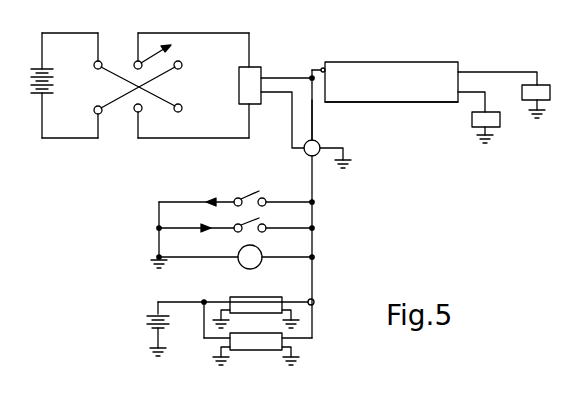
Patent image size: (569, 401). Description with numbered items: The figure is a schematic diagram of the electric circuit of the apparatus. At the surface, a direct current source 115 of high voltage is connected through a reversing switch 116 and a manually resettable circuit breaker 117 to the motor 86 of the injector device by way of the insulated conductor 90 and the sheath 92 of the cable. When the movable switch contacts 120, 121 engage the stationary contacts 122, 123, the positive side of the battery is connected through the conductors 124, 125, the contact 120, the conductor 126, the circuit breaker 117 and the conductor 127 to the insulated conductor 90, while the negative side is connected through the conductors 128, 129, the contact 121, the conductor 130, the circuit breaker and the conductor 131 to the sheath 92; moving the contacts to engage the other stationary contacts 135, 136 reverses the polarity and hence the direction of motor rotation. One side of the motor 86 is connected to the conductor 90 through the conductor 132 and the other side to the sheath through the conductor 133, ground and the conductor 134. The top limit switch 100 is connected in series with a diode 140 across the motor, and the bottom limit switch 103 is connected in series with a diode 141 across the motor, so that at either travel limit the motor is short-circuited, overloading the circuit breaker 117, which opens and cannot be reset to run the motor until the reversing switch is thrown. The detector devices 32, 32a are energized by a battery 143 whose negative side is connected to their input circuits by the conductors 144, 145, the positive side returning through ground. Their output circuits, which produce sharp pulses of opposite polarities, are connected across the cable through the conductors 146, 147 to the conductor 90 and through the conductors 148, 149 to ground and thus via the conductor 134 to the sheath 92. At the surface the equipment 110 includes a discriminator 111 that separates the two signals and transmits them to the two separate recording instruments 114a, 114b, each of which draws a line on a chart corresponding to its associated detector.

The conductor 128 is at (82, 33).
The conductor 124 is at (80, 138).
The direct current source 115 is at (36, 100).
The stationary contact 135 is at (92, 62).
The stationary contact 136 is at (92, 109).
The conductor 129 is at (135, 67).
The movable switch contact 121 is at (140, 106).
The stationary contact 122 is at (182, 64).
The stationary contact 123 is at (181, 106).
The conductor 125 is at (116, 87).
The movable switch contact 120 is at (156, 49).
The conductor 126 is at (224, 33).
The conductor 130 is at (215, 138).
The reversing switch 116 is at (139, 138).
The circuit breaker 117 is at (254, 66).
The conductor 127 is at (298, 78).
The conductor 131 is at (289, 132).
The discriminator 111 is at (394, 62).
The equipment 110 is at (417, 104).
The insulated conductor 90 is at (317, 112).
The sheath 92 is at (319, 142).
The conductor 134 is at (347, 157).
The recording instrument 114b is at (537, 84).
The recording instrument 114a is at (502, 124).
The diode 140 is at (213, 200).
The diode 141 is at (202, 226).
The top limit switch 100 is at (252, 192).
The bottom limit switch 103 is at (257, 220).
The conductor 133 is at (198, 258).
The conductor 132 is at (296, 258).
The motor 86 is at (250, 270).
The conductor 144 is at (208, 302).
The battery 143 is at (146, 322).
The conductor 145 is at (203, 320).
The detector device 32 is at (264, 314).
The detector device 32a is at (276, 352).
The conductor 146 is at (311, 299).
The conductor 148 is at (299, 311).
The conductor 147 is at (303, 337).
The conductor 149 is at (307, 352).